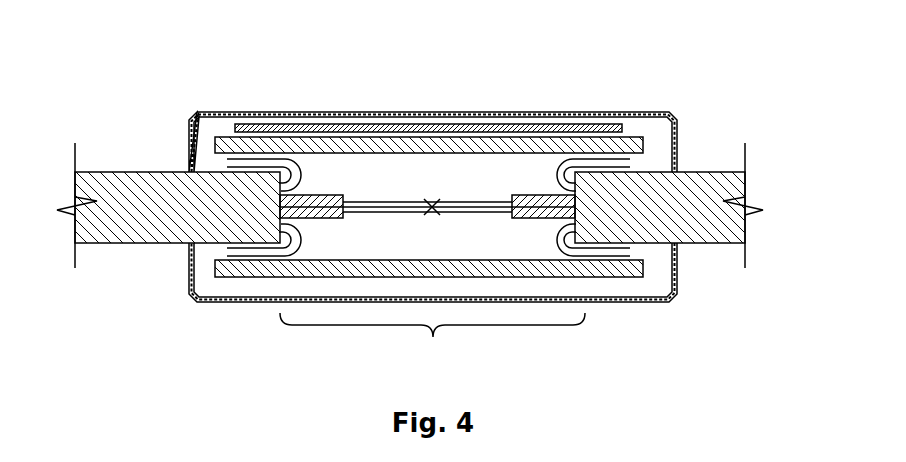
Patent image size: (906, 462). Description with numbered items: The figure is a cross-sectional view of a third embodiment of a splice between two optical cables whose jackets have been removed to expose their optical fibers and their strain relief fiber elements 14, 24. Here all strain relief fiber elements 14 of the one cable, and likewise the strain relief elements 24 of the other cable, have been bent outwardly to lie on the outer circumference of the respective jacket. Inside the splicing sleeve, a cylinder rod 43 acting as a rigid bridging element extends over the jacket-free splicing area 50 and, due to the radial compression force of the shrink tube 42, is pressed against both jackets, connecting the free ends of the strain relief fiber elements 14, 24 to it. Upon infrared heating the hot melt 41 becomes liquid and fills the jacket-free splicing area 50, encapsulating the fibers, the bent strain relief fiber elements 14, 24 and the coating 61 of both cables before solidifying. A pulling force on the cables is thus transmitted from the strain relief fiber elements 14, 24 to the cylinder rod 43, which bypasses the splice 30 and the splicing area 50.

The strain relief fiber elements 14 is at (258, 160).
The strain relief fiber elements 24 is at (627, 162).
The splice 30 is at (432, 199).
The hot melt 41 is at (632, 137).
The shrink tube 42 is at (568, 112).
The cylinder rod 43 is at (593, 123).
The jacket-free splicing area 50 is at (432, 340).
The coating 61 is at (306, 194).